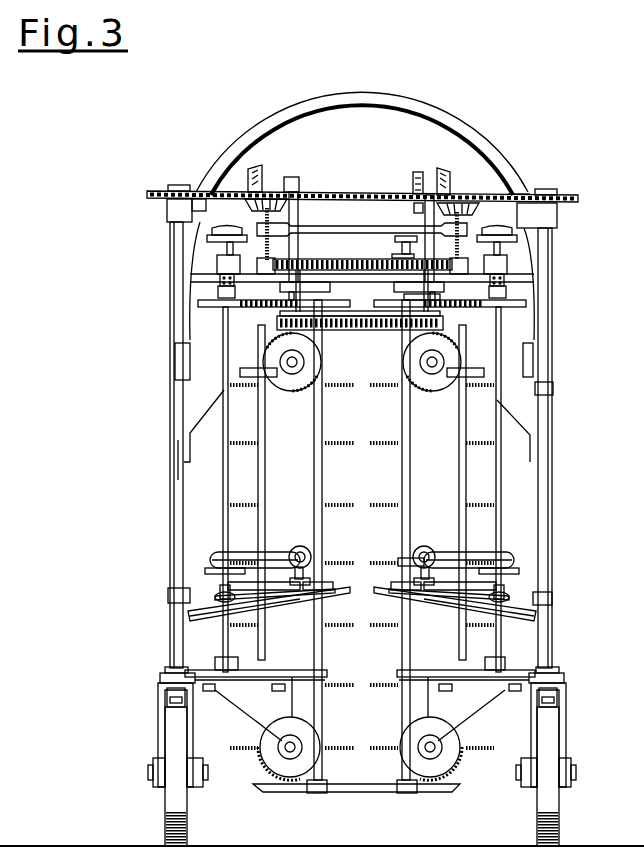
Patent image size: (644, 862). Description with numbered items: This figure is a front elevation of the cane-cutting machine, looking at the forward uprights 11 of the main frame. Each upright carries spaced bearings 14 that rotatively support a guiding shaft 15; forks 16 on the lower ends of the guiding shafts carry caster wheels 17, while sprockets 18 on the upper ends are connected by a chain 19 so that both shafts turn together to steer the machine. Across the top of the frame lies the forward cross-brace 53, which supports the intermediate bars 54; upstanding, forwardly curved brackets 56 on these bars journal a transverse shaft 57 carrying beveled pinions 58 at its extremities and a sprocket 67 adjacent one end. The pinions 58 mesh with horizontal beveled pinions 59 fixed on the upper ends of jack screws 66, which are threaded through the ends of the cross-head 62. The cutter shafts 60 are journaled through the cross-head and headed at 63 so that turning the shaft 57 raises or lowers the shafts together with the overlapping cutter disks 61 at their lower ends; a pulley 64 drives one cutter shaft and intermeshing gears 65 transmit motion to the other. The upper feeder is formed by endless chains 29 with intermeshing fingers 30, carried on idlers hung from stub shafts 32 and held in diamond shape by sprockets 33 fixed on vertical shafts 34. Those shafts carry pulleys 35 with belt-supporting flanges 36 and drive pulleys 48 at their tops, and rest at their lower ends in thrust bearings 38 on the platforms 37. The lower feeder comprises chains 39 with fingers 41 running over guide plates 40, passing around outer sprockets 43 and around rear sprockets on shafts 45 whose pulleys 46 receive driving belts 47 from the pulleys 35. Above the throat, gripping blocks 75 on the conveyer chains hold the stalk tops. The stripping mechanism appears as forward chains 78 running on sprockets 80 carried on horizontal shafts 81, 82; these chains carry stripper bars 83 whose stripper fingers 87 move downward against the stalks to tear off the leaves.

The forward uprights 11 is at (170, 301).
The bearings 14 is at (175, 380).
The guiding shafts 15 is at (170, 462).
The forks 16 is at (158, 714).
The caster wheels 17 is at (176, 748).
The sprockets 18 is at (178, 185).
The chain 19 is at (526, 193).
The endless chains 29 is at (265, 309).
The fingers 30 is at (210, 308).
The stub shafts 32 is at (440, 296).
The sprockets 33 is at (236, 295).
The vertical shafts 34 is at (223, 458).
The pulleys 35 is at (220, 552).
The belt-supporting flanges 36 is at (215, 574).
The platforms 37 is at (278, 670).
The bearings 38 is at (218, 660).
The endless belts or chains 39 is at (263, 590).
The guide plates 40 is at (338, 593).
The fingers 41 is at (392, 584).
The outer sprockets 43 is at (552, 597).
The shafts 45 is at (405, 565).
The pulleys 46 is at (299, 546).
The driving belts 47 is at (250, 553).
The drive pulleys 48 is at (228, 228).
The forward cross-brace 53 is at (507, 180).
The intermediate bars 54 is at (532, 284).
The brackets 56 is at (298, 194).
The transverse shaft 57 is at (384, 192).
The beveled pinions 58 is at (256, 169).
The beveled pinions 59 is at (270, 199).
The cutter shafts 60 is at (401, 472).
The cutter disks 61 is at (357, 793).
The cross-head 62 is at (298, 228).
The heads 63 is at (328, 225).
The pulley 64 is at (395, 242).
The intermeshing gears 65 is at (386, 272).
The jack screws 66 is at (240, 260).
The sprocket 67 is at (420, 172).
The gripping blocks 75 is at (350, 331).
The forward chains 78 is at (265, 421).
The sprockets 80 is at (301, 386).
The shafts 81 is at (288, 359).
The shafts 82 is at (300, 747).
The stripper bars 83 is at (325, 443).
The stripper fingers 87 is at (379, 389).